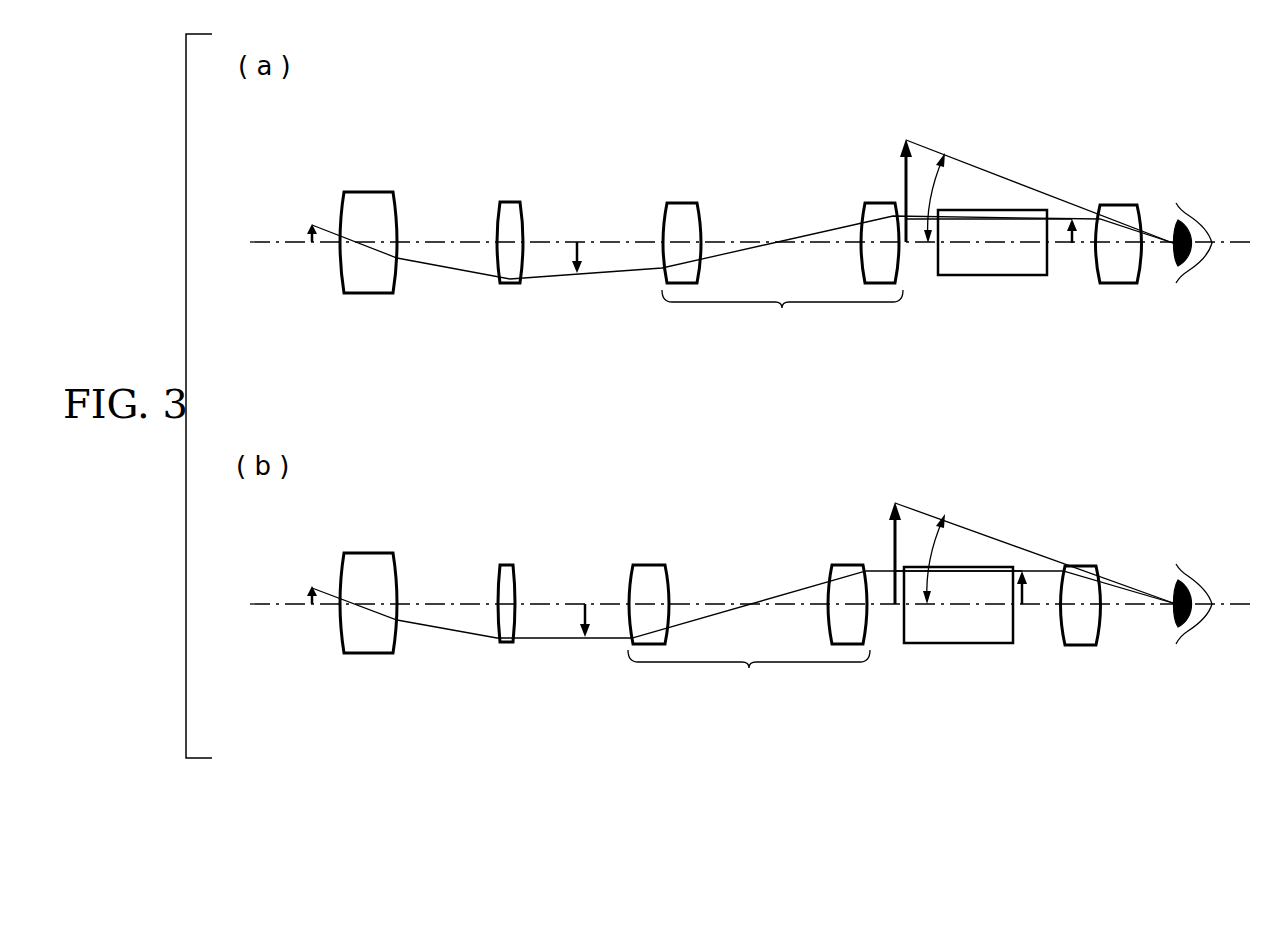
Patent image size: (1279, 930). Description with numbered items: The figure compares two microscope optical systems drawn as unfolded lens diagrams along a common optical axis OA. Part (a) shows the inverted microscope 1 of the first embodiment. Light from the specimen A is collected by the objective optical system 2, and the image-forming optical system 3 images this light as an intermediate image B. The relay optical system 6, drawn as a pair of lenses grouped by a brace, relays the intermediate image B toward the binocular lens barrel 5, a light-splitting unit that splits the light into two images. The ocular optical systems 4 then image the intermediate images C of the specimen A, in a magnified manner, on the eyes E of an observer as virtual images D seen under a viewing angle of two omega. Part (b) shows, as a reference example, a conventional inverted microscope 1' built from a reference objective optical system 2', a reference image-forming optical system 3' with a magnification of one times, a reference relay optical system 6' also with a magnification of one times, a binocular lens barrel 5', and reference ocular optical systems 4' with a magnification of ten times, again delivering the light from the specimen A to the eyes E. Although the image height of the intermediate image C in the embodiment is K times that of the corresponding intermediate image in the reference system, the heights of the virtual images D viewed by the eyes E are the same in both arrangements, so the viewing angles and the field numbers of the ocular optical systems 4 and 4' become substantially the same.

The inverted microscope 1 is at (1081, 131).
The objective optical system 2 is at (368, 278).
The image-forming optical system 3 is at (510, 277).
The ocular optical systems 4 is at (1119, 280).
The binocular lens barrel 5 is at (992, 277).
The relay optical system 6 is at (782, 271).
The inverted microscope 1' is at (1084, 492).
The reference objective optical system 2' is at (368, 638).
The reference image-forming optical system 3' is at (509, 639).
The reference ocular optical systems 4' is at (1081, 640).
The binocular lens barrel 5' is at (958, 641).
The reference relay optical system 6' is at (749, 633).
The specimen A is at (289, 223).
The intermediate image B is at (564, 226).
The intermediate images C is at (1076, 264).
The virtual images D is at (882, 190).
The eyes E is at (1217, 239).
The optical axis OA is at (750, 205).